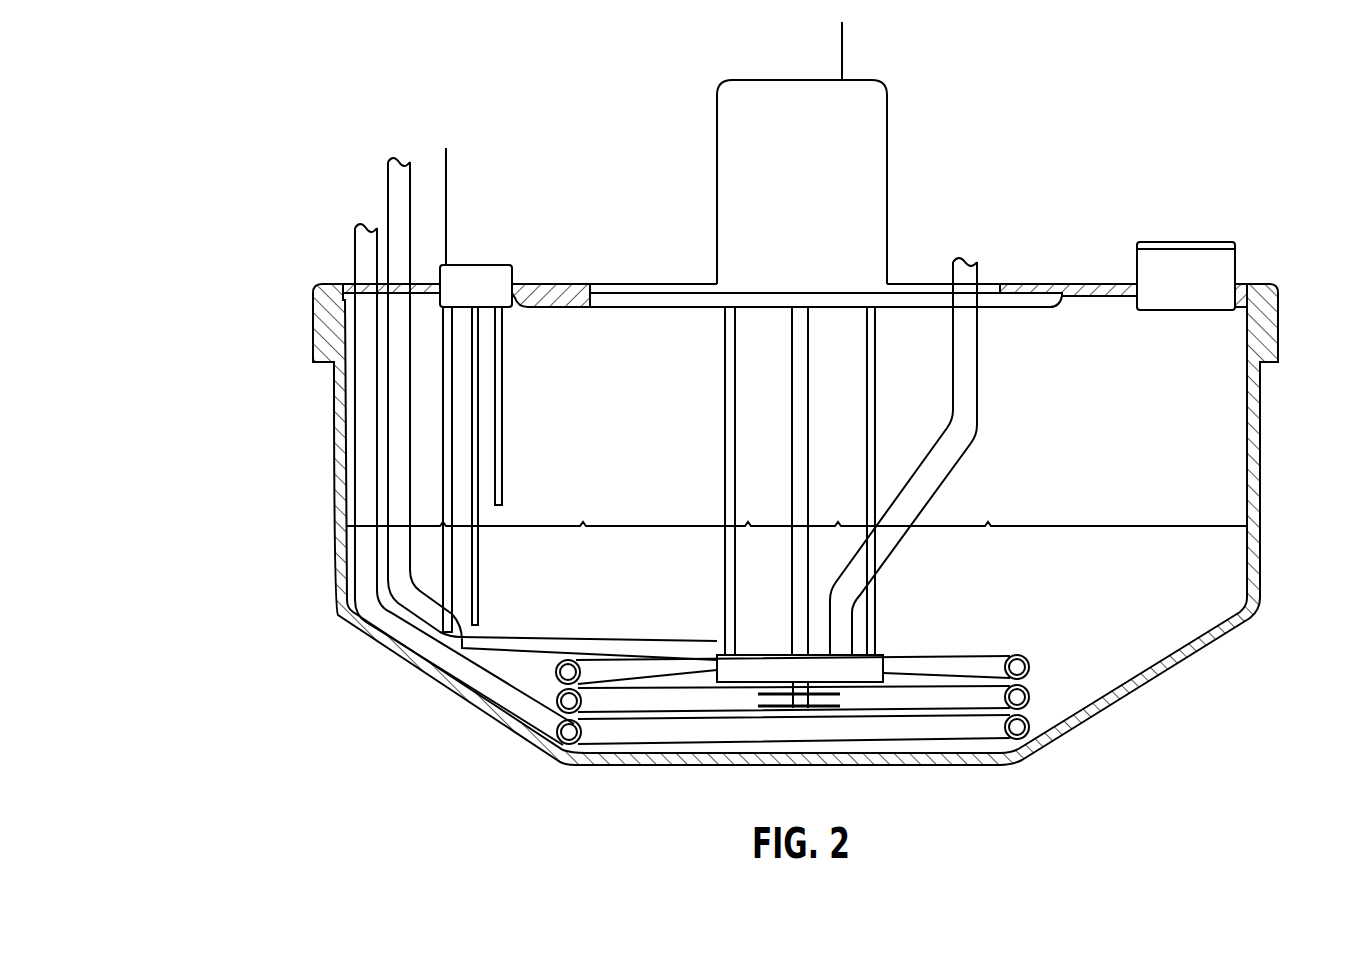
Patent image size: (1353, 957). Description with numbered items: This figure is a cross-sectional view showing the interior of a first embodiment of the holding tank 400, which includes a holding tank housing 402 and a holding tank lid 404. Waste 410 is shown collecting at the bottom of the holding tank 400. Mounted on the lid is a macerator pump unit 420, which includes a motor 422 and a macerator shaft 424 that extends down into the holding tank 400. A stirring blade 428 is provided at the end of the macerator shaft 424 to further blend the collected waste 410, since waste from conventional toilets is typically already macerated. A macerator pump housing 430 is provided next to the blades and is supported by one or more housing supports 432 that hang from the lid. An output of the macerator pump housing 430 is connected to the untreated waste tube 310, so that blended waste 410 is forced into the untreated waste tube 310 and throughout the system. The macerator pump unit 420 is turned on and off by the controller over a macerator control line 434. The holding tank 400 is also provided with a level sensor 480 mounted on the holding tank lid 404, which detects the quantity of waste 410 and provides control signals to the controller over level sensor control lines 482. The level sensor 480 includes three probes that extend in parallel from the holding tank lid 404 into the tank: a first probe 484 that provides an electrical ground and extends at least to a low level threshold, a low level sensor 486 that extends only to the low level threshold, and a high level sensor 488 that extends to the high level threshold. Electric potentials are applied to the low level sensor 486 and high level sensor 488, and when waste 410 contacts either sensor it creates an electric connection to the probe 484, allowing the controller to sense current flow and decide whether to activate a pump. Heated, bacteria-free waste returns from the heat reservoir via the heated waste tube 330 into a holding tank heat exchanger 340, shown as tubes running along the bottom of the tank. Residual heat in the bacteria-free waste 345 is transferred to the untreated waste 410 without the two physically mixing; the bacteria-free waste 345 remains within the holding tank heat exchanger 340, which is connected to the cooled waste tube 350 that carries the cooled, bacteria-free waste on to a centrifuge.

The holding tank 400 is at (240, 281).
The holding tank housing 402 is at (1262, 604).
The holding tank lid 404 is at (1058, 284).
The waste 410 is at (1098, 526).
The macerator pump unit 420 is at (703, 97).
The motor 422 is at (817, 149).
The macerator shaft 424 is at (808, 464).
The stirring blade 428 is at (836, 704).
The macerator pump housing 430 is at (724, 664).
The housing supports 432 is at (725, 337).
The macerator control line 434 is at (844, 43).
The untreated waste tube 310 is at (977, 410).
The heated waste tube 330 is at (396, 178).
The holding tank heat exchanger 340 is at (1028, 660).
The bacteria-free waste 345 is at (1018, 727).
The cooled waste tube 350 is at (366, 250).
The level sensor 480 is at (514, 268).
The level sensor control lines 482 is at (447, 200).
The first probe 484 is at (447, 500).
The low level sensor 486 is at (476, 446).
The high level sensor 488 is at (502, 433).